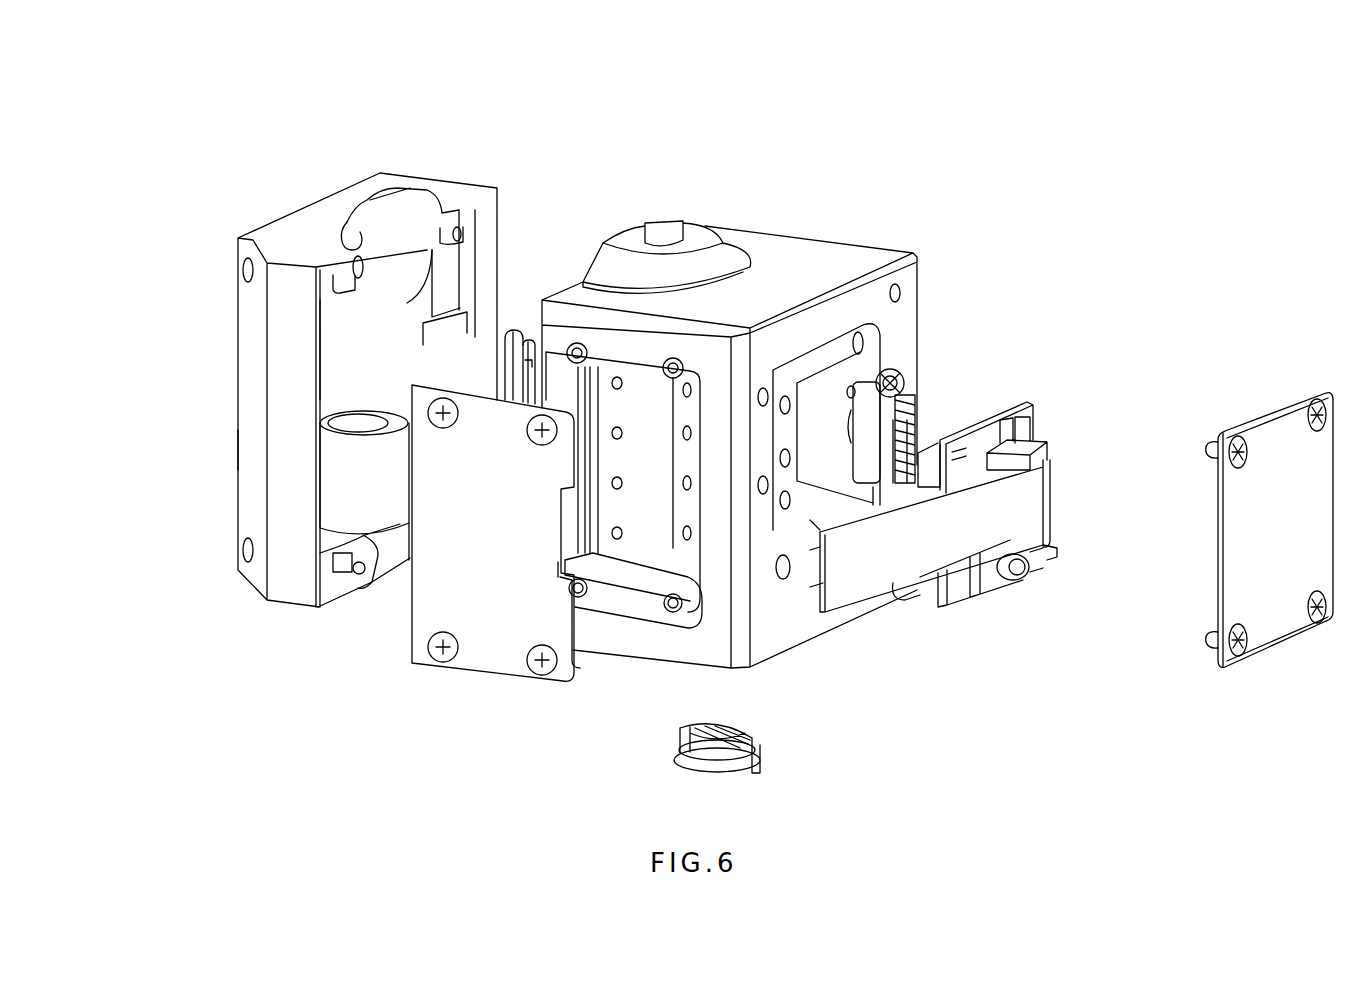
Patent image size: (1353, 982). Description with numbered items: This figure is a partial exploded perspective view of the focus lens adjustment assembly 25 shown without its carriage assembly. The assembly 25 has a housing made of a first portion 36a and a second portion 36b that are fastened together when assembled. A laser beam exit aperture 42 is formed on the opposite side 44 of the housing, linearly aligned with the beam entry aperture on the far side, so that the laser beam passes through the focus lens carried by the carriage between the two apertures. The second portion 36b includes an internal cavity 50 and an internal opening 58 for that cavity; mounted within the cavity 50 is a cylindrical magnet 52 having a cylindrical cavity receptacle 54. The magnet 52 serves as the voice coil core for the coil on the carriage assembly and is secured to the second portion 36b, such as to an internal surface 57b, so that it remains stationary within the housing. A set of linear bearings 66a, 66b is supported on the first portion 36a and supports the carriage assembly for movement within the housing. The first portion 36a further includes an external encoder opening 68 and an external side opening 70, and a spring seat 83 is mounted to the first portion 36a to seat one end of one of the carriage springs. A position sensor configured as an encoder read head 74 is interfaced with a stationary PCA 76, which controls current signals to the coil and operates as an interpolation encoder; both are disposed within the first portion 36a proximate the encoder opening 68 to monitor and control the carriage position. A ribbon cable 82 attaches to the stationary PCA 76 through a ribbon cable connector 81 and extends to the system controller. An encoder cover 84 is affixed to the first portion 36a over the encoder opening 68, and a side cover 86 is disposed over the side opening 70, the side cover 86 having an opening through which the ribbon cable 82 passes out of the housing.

The focus lens adjustment assembly 25 is at (302, 76).
The opposite side 44 is at (385, 179).
The internal cavity 50 is at (405, 302).
The internal opening 58 is at (320, 340).
The cylindrical cavity receptacle 54 is at (350, 423).
The cylindrical magnet 52 is at (340, 467).
The second portion 36b is at (237, 510).
The hook 57b is at (372, 583).
The side cover 86 is at (470, 667).
The linear bearing 66a is at (513, 405).
The linear bearing 66b is at (573, 463).
The laser beam exit aperture 42 is at (685, 222).
The first portion 36a is at (765, 225).
The external encoder opening 68 is at (880, 345).
The external side opening 70 is at (647, 623).
The encoder read head 74 is at (898, 375).
The stationary PCA 76 is at (930, 453).
The ribbon cable connector 81 is at (1045, 430).
The ribbon cable 82 is at (1030, 512).
The spring seat 83 is at (690, 770).
The encoder cover 84 is at (1228, 565).